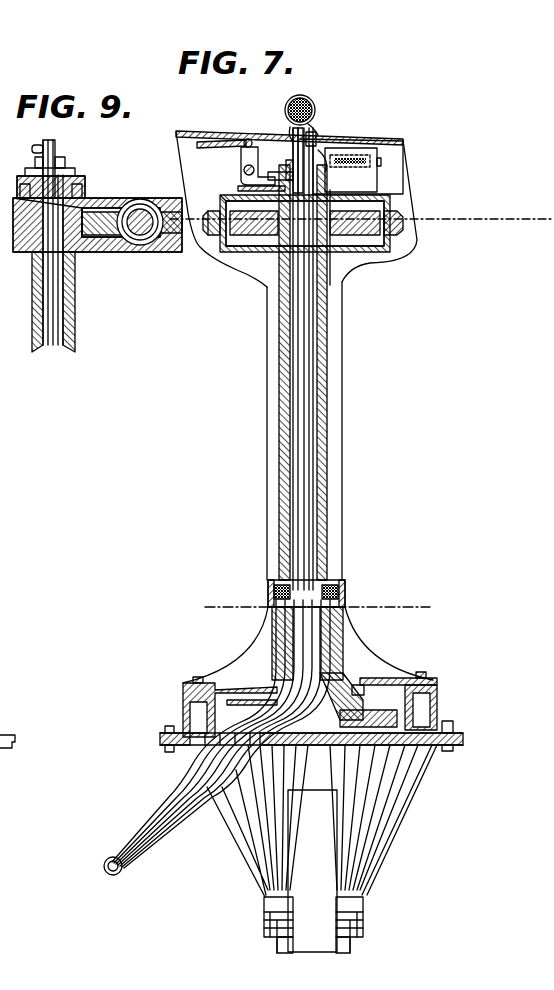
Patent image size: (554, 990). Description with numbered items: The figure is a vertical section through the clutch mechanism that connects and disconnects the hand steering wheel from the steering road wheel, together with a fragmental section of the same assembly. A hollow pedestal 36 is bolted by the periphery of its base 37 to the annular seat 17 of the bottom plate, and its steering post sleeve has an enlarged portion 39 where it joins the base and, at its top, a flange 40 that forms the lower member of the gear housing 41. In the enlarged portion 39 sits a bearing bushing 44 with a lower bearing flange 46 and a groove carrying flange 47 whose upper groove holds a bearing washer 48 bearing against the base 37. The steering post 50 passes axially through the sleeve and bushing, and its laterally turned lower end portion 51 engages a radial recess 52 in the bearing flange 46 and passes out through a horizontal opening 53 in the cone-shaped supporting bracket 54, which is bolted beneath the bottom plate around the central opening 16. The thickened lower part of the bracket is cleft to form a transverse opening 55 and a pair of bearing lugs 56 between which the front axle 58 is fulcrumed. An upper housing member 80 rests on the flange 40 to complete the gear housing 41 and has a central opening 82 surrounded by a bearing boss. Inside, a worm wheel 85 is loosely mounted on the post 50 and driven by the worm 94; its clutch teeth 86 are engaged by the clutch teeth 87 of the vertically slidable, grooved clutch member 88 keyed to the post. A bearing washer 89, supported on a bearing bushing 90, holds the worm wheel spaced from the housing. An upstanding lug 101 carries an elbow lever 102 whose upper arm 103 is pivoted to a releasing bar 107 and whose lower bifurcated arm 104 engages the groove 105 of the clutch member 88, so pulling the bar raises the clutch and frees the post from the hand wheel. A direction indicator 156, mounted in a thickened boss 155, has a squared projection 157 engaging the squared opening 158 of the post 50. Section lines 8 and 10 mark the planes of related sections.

In FIG. 7, the section line 8- 8 is at (197, 199).
In FIG. 7, the section line 10- 10 is at (215, 585).
In FIG. 7, the central opening 16 is at (433, 683).
In FIG. 7, the annular seat 17 is at (153, 660).
In FIG. 7, the hollow pedestal 36 is at (370, 642).
In FIG. 7, the base 37 is at (405, 683).
In FIG. 7, the enlarged portion 39 is at (323, 452).
In FIG. 9, the enlarged portion 39 is at (70, 345).
In FIG. 7, the flange 40 is at (385, 250).
In FIG. 9, the flange 40 is at (182, 227).
In FIG. 7, the gear housing 41 is at (398, 205).
In FIG. 7, the bearing bushing 44 is at (342, 600).
In FIG. 7, the bearing flange 46 is at (380, 712).
In FIG. 7, the groove carrying flange 47 is at (366, 690).
In FIG. 7, the bearing washer 48 is at (345, 690).
In FIG. 7, the steering post 50 is at (306, 405).
In FIG. 9, the steering post 50 is at (60, 328).
In FIG. 7, the laterally turned lower end portion 51 is at (250, 705).
In FIG. 7, the radial recess 52 is at (222, 690).
In FIG. 7, the horizontal opening 53 is at (185, 763).
In FIG. 7, the cone-shaped supporting bracket 54 is at (390, 818).
In FIG. 7, the transverse opening 55 is at (312, 871).
In FIG. 7, the bearing lugs 56 is at (357, 910).
In FIG. 7, the front axle 58 is at (107, 874).
In FIG. 7, the upper housing member 80 is at (359, 169).
In FIG. 7, the central opening 82 is at (351, 170).
In FIG. 7, the worm wheel 85 is at (252, 246).
In FIG. 9, the worm wheel 85 is at (100, 232).
In FIG. 7, the clutch teeth 86 is at (258, 235).
In FIG. 7, the clutch teeth 87 is at (316, 138).
In FIG. 7, the clutch member 88 is at (320, 153).
In FIG. 7, the bearing washer 89 is at (352, 248).
In FIG. 7, the bearing bushing 90 is at (328, 283).
In FIG. 9, the worm 94 is at (142, 244).
In FIG. 7, the upstanding lug 101 is at (242, 188).
In FIG. 9, the upstanding lug 101 is at (66, 168).
In FIG. 7, the elbow lever 102 is at (263, 145).
In FIG. 9, the elbow lever 102 is at (55, 150).
In FIG. 7, the upper arm 103 is at (242, 140).
In FIG. 7, the lower bifurcated arm 104 is at (272, 172).
In FIG. 9, the lower bifurcated arm 104 is at (84, 192).
In FIG. 7, the groove 105 is at (370, 170).
In FIG. 7, the releasing bar 107 is at (204, 148).
In FIG. 7, the thickened boss 155 is at (312, 137).
In FIG. 7, the direction indicator 156 is at (298, 95).
In FIG. 7, the squared projection 157 is at (318, 128).
In FIG. 7, the squared opening 158 is at (370, 140).